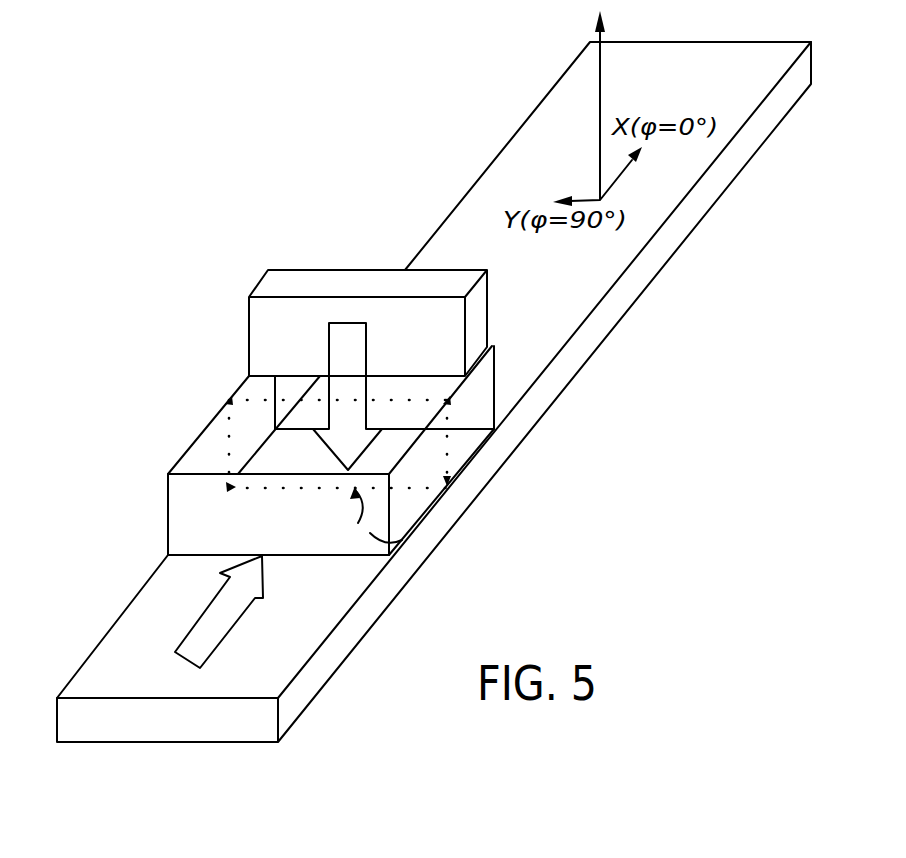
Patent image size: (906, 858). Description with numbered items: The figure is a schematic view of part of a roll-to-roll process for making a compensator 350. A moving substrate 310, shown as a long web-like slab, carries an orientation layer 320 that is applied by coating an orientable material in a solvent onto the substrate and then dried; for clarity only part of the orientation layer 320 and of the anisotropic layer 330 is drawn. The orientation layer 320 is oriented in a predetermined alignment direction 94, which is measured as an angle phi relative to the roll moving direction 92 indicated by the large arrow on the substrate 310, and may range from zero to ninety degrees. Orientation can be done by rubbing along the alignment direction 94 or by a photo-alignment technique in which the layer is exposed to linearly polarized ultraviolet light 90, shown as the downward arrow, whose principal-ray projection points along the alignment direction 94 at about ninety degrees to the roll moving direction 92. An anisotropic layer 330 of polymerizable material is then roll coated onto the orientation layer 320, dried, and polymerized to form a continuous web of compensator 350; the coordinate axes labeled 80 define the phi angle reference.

The sample 80 is at (573, 53).
The moving substrate 310 is at (108, 666).
The orientation layer 320 is at (173, 527).
The anisotropic layer 330 is at (266, 291).
The compensator 350 is at (258, 400).
The linearly polarized ultraviolet light 90 is at (357, 334).
The roll moving direction 92 is at (233, 620).
The alignment direction φ 94 is at (378, 541).